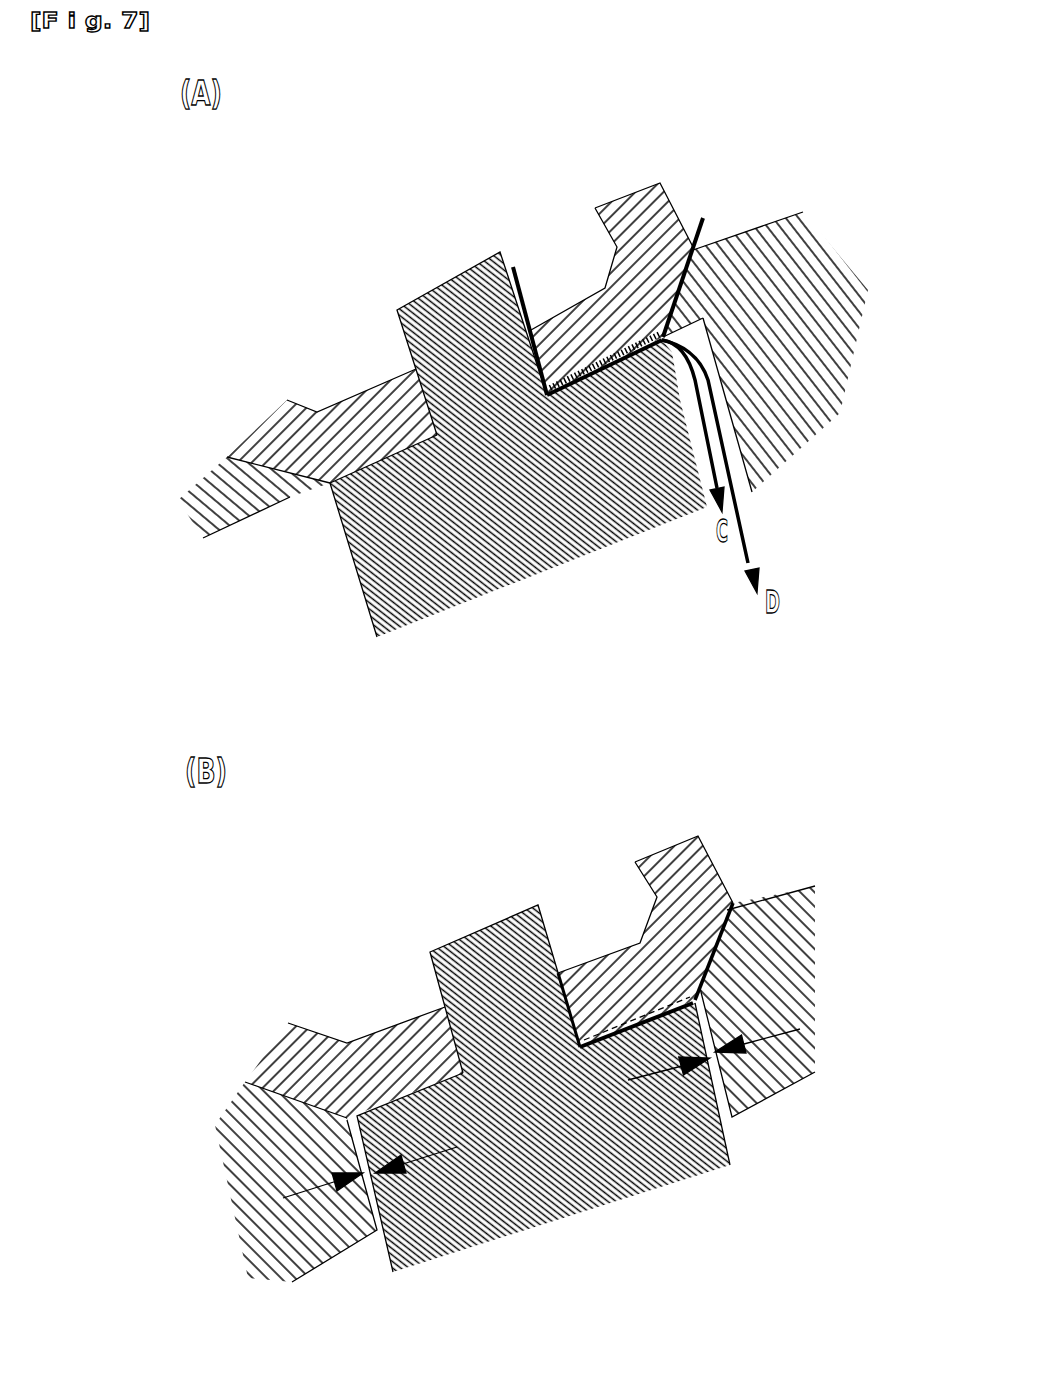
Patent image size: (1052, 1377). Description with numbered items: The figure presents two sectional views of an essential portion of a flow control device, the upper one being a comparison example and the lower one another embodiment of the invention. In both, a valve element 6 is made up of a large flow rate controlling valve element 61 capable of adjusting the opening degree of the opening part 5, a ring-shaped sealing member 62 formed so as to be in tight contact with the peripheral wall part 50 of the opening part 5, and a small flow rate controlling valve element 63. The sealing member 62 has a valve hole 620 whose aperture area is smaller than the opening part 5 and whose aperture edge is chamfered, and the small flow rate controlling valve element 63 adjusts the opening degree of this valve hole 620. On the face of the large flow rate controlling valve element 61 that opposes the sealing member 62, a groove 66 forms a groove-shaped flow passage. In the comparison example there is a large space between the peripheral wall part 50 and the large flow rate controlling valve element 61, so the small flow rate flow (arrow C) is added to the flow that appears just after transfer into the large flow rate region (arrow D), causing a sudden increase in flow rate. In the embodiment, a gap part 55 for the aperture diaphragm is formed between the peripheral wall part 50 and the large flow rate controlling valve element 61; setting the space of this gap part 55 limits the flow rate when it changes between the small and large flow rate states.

The opening part 5 is at (683, 292).
The peripheral wall part 50 is at (760, 337).
The gap part 55 is at (541, 1113).
The valve element 6 is at (372, 347).
The large flow rate controlling valve element 61 is at (417, 540).
The sealing member 62 is at (660, 230).
The valve hole 620 is at (545, 335).
The small flow rate controlling valve element 63 is at (470, 303).
The groove 66 is at (598, 388).